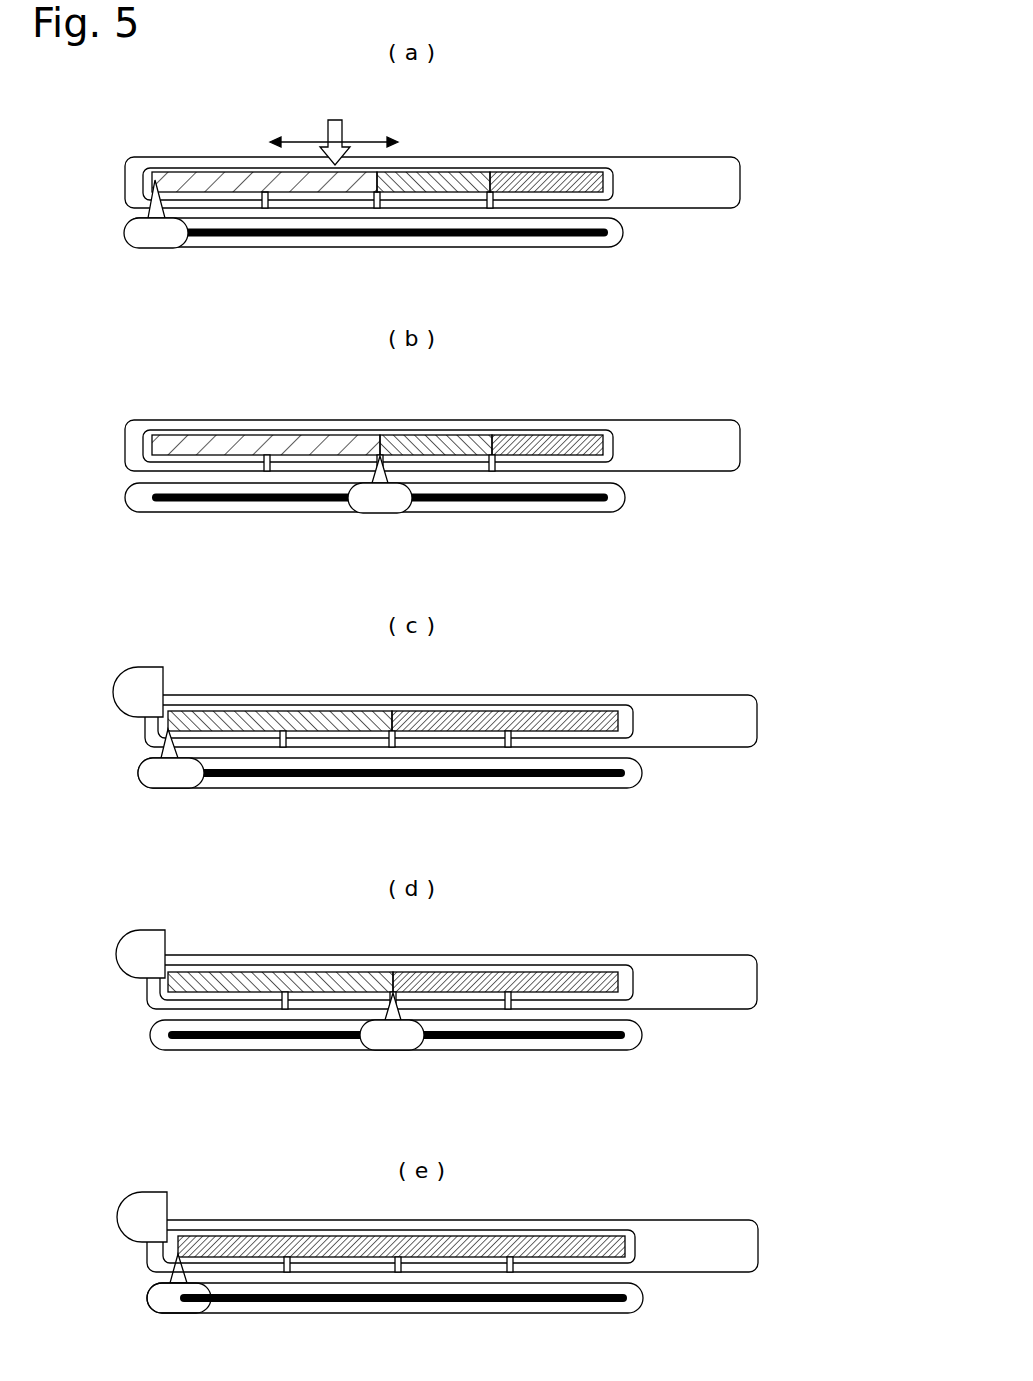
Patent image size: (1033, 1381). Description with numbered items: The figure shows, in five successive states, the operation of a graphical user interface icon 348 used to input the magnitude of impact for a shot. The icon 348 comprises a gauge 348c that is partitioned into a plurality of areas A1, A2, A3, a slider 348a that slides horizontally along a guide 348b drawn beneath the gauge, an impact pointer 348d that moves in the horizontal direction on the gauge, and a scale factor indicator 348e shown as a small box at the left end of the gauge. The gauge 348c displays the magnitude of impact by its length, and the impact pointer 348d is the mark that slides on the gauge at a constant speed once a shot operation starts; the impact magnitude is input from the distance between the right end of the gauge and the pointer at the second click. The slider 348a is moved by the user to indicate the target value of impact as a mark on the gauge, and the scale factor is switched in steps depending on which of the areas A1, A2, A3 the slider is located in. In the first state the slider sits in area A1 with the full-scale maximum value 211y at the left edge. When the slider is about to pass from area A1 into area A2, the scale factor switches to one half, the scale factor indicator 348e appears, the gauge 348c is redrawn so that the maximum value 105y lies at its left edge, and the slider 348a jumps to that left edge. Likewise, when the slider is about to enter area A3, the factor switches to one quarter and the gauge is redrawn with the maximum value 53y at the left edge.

The icon 348 is at (432, 139).
The slider 348a is at (164, 249).
The guide 348b is at (617, 250).
The gauge 348c is at (686, 200).
The impact pointer 348d is at (335, 119).
The scale factor indicator 348e is at (168, 683).
The maximum impact value at full scale 211y is at (156, 214).
The maximum impact value at half scale 105y is at (275, 622).
The maximum impact value at quarter scale 53y is at (285, 1153).
The first area of the gauge A1 is at (257, 172).
The second area of the gauge A2 is at (428, 172).
The third area of the gauge A3 is at (553, 172).